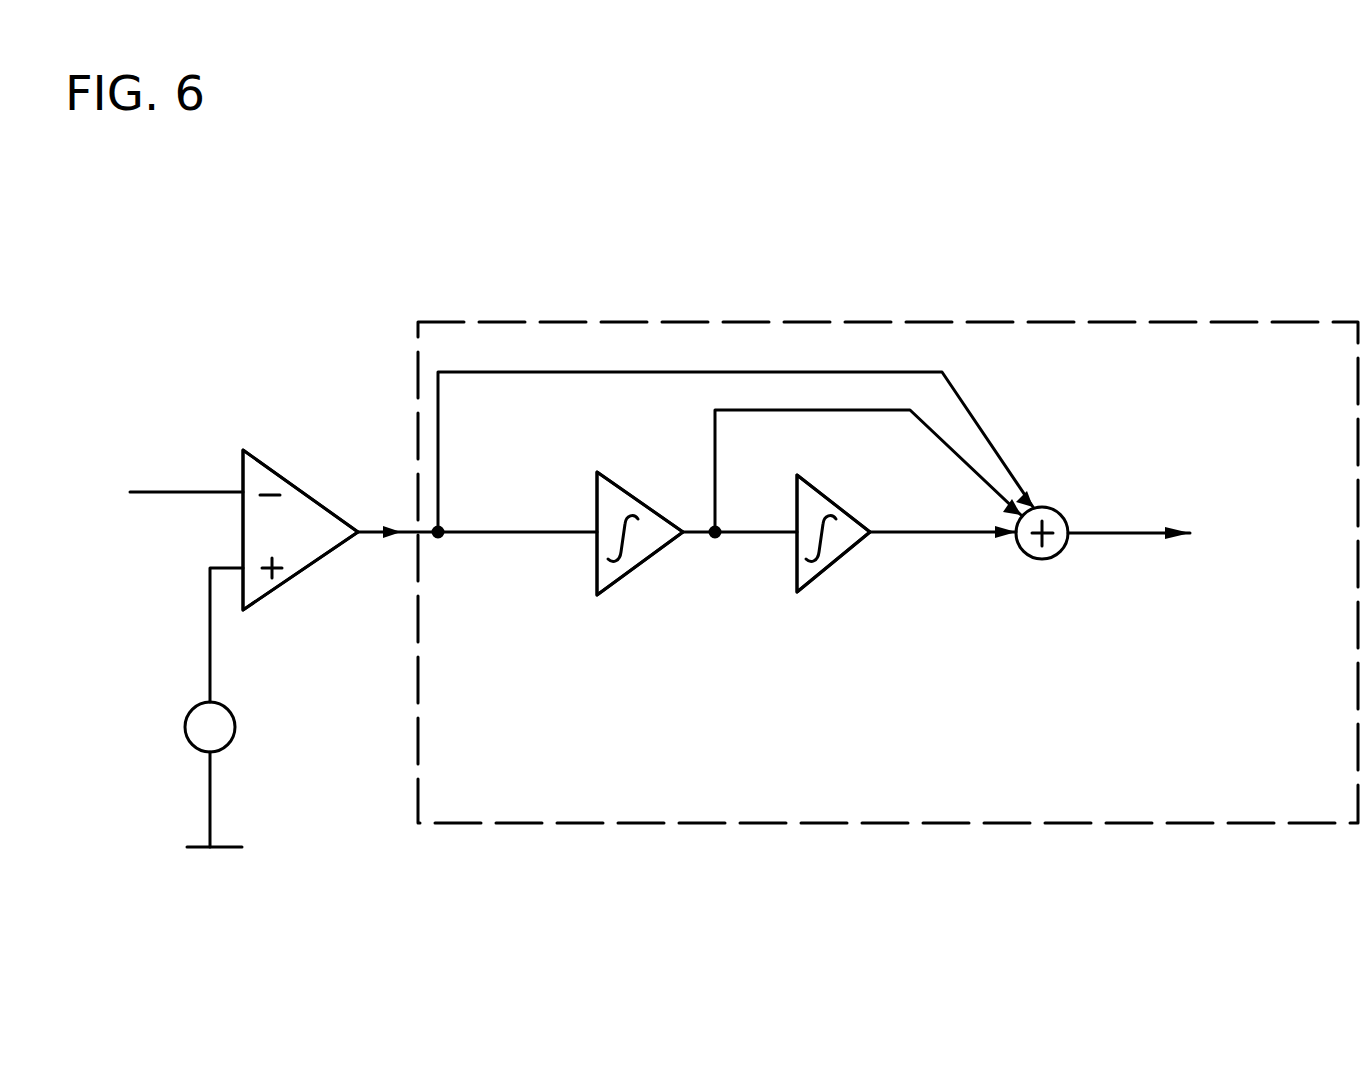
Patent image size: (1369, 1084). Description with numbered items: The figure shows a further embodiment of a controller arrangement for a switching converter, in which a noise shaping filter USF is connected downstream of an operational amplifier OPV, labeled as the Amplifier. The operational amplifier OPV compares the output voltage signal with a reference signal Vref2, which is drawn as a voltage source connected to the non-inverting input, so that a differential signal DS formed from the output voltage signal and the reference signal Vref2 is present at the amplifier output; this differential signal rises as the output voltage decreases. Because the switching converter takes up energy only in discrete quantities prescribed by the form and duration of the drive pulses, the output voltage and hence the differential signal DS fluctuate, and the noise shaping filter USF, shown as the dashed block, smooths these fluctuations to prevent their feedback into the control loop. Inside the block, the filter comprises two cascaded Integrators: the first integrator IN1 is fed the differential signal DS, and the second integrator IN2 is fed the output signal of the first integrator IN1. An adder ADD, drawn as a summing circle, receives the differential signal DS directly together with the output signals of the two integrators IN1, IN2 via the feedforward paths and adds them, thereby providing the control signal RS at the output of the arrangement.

The operational amplifier OPV is at (325, 563).
The amplifier Amplifier is at (287, 477).
The reference signal Vref2 is at (265, 698).
The differential signal DS is at (477, 503).
The first integrator IN1 is at (630, 572).
The second integrator IN2 is at (827, 572).
The integrators Integrators is at (733, 603).
The adder ADD is at (1067, 517).
The control signal RS is at (1145, 558).
The noise shaping filter USF is at (737, 823).